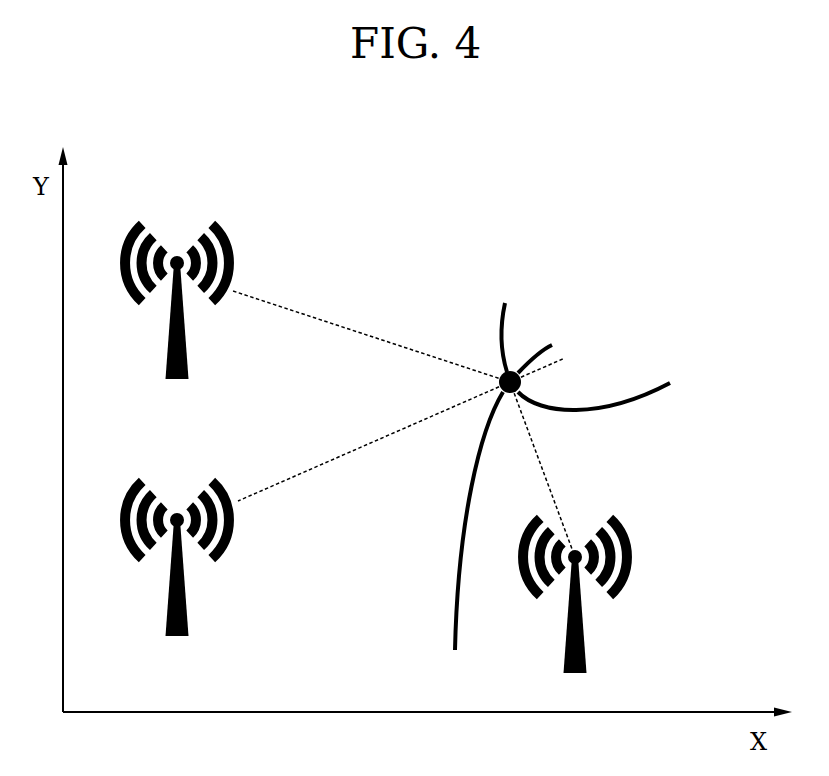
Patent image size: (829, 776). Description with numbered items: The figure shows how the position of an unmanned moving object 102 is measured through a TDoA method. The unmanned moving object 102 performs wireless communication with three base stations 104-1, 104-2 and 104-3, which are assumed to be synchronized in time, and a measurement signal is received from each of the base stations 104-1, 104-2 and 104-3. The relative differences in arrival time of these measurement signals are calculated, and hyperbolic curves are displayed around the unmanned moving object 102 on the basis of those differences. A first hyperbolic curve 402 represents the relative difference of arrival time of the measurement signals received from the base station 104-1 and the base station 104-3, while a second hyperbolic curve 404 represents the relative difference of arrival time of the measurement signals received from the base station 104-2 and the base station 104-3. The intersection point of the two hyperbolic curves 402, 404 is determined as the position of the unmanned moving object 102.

The unmanned moving object 102 is at (527, 388).
The base station 104-1 is at (185, 352).
The base station 104-2 is at (187, 602).
The base station 104-3 is at (585, 640).
The first hyperbolic curve 402 is at (640, 402).
The second hyperbolic curve 404 is at (455, 578).